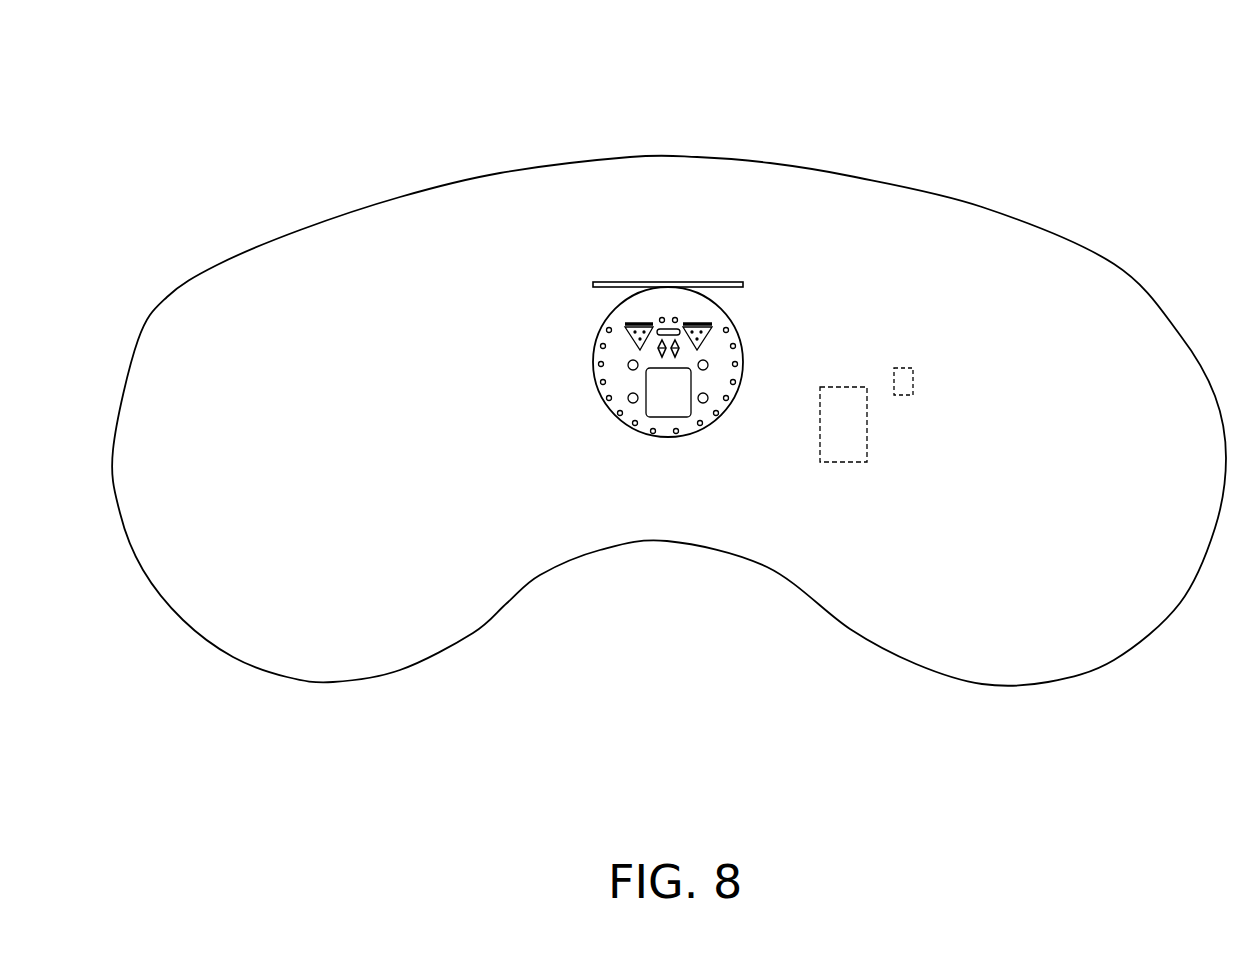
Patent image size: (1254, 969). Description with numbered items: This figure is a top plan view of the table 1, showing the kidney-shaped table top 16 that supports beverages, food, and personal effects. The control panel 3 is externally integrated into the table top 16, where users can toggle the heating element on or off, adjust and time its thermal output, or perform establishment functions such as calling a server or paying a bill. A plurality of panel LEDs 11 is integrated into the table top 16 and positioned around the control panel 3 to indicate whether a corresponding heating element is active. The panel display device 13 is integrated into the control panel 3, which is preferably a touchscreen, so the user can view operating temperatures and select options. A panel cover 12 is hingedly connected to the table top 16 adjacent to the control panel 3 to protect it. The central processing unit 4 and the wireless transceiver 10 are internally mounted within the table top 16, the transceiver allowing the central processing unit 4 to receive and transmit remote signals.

The table 1 is at (414, 78).
The control panel 3 is at (670, 296).
The central processing unit 4 is at (867, 450).
The wireless transceiver 10 is at (914, 375).
The plurality of panel LEDs 11 is at (603, 345).
The panel cover 12 is at (625, 285).
The panel display device 13 is at (668, 412).
The table top 16 is at (318, 237).